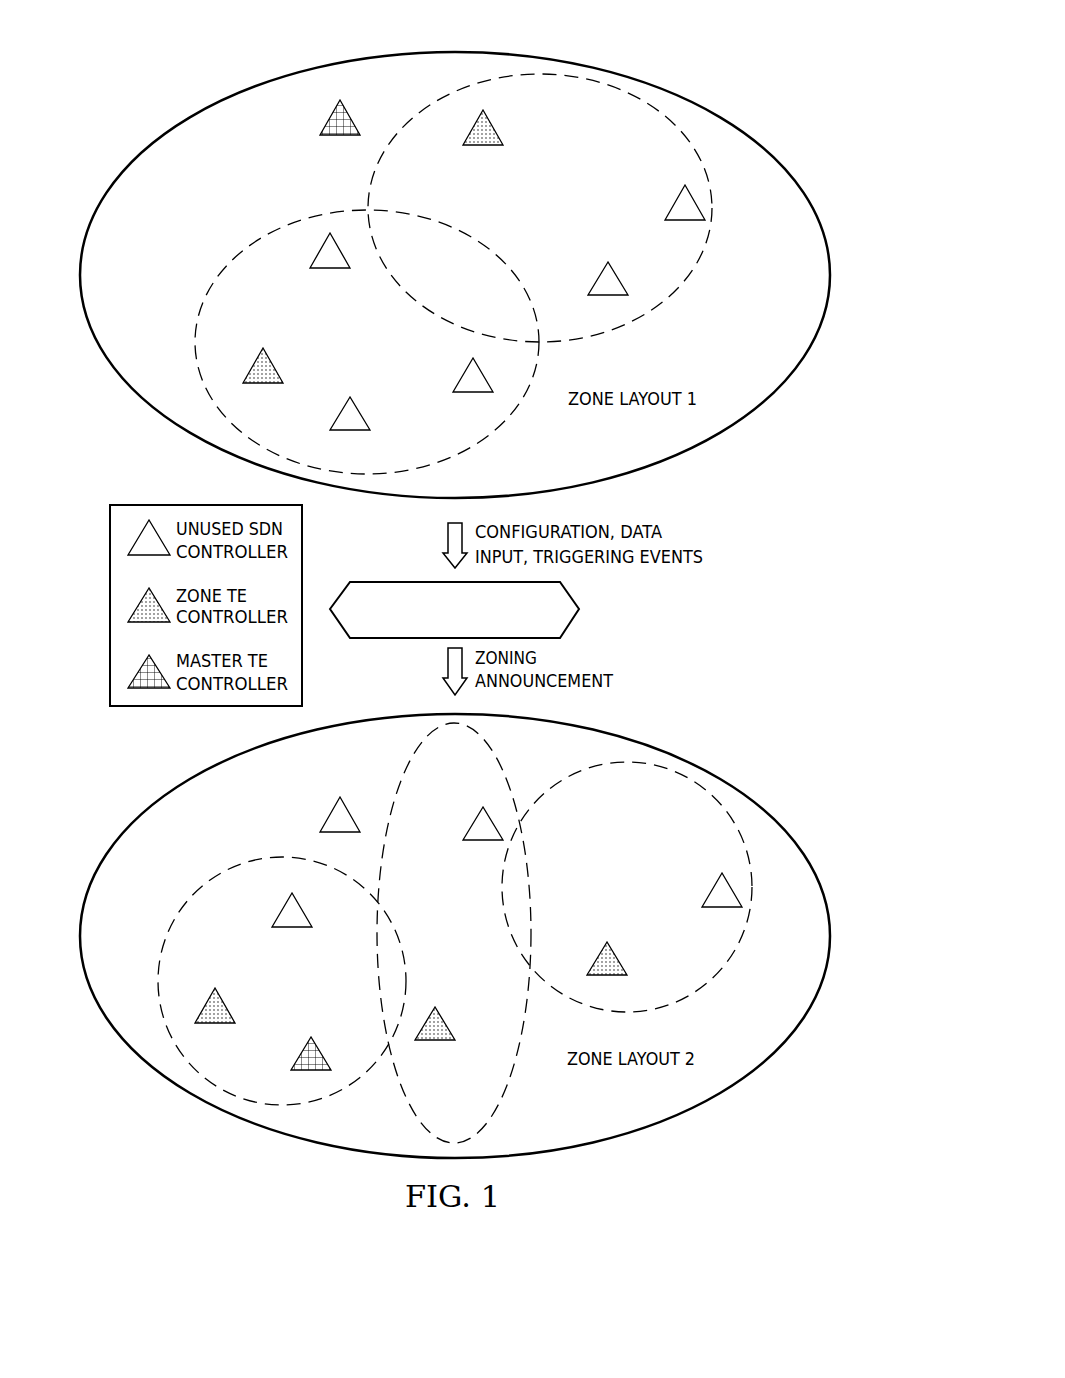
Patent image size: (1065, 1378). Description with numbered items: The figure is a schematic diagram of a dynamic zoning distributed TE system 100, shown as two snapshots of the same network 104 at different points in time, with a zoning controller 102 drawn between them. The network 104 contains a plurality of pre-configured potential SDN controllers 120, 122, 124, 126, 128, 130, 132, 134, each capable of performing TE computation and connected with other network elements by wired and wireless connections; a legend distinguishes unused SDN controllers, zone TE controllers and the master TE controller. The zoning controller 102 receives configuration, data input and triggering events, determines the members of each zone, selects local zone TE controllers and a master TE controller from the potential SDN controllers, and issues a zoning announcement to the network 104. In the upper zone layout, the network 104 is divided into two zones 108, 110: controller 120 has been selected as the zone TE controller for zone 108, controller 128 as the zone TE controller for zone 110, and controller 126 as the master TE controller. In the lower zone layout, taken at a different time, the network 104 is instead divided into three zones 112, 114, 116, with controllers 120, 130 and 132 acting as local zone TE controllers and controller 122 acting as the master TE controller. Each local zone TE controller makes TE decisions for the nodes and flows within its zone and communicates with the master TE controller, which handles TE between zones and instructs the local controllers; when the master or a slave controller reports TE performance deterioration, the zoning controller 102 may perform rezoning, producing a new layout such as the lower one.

The dynamic zoning distributed TE system 100 is at (455, 586).
The zoning controller 102 is at (572, 625).
The network 104 is at (214, 106).
The zone 108 is at (256, 237).
The zone 110 is at (639, 323).
The zone 112 is at (219, 874).
The zone 114 is at (394, 784).
The zone 116 is at (718, 978).
The potential SDN controller 120 is at (276, 363).
The potential SDN controller 122 is at (361, 410).
The potential SDN controller 124 is at (330, 269).
The potential SDN controller 126 is at (325, 118).
The potential SDN controller 128 is at (484, 146).
The potential SDN controller 130 is at (463, 375).
The potential SDN controller 132 is at (597, 280).
The potential SDN controller 134 is at (672, 203).